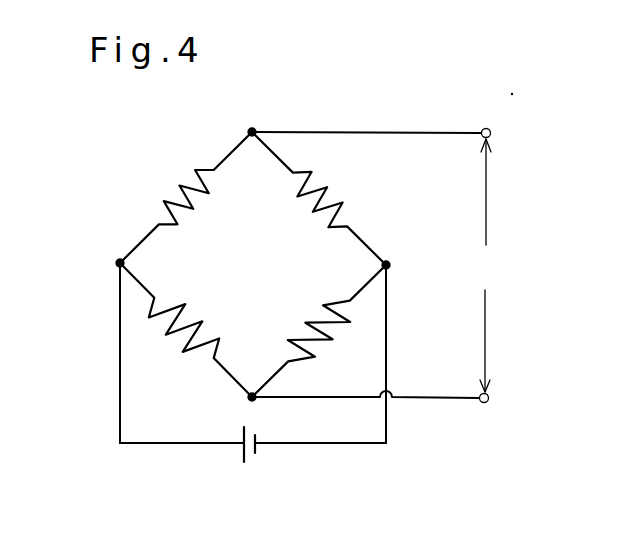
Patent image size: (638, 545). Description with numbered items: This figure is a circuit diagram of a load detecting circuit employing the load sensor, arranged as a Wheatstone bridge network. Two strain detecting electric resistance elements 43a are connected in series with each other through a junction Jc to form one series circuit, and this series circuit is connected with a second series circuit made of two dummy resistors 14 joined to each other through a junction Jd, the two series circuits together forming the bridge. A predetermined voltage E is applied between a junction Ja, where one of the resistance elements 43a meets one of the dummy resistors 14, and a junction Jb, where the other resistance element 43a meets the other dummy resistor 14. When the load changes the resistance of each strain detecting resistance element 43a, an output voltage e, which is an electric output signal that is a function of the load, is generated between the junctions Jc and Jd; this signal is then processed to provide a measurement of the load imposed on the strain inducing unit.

The electric resistance elements 43a is at (182, 187).
The dummy resistors 14 is at (187, 350).
The junction Ja is at (97, 261).
The junction Jb is at (403, 264).
The junction Jc is at (253, 114).
The junction Jd is at (251, 374).
The output voltage e is at (488, 265).
The predetermined voltage E is at (250, 463).